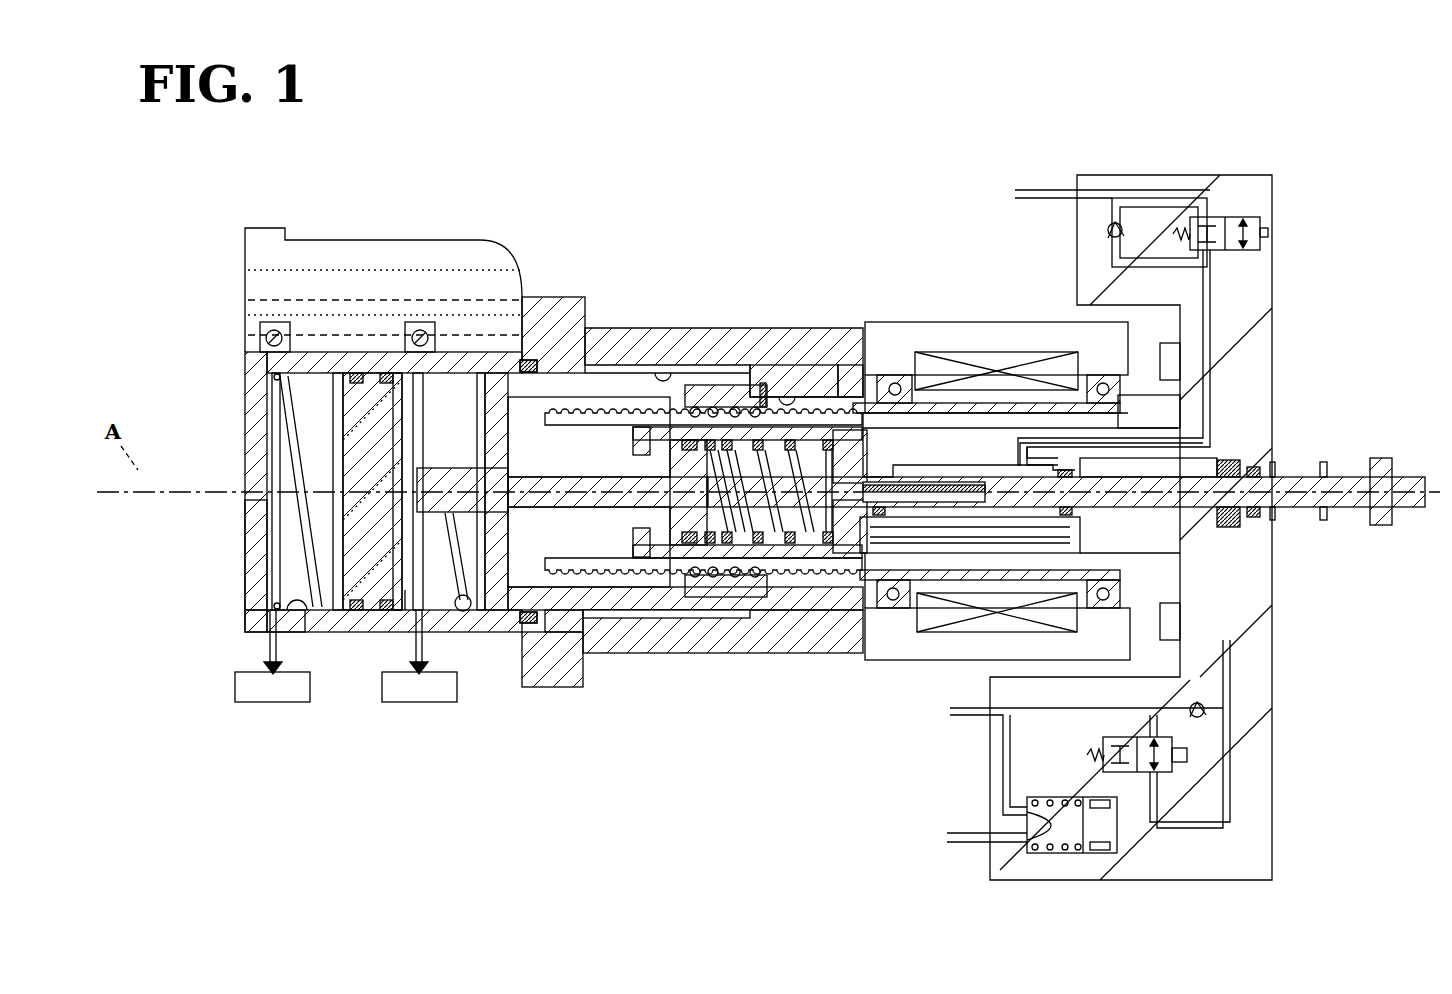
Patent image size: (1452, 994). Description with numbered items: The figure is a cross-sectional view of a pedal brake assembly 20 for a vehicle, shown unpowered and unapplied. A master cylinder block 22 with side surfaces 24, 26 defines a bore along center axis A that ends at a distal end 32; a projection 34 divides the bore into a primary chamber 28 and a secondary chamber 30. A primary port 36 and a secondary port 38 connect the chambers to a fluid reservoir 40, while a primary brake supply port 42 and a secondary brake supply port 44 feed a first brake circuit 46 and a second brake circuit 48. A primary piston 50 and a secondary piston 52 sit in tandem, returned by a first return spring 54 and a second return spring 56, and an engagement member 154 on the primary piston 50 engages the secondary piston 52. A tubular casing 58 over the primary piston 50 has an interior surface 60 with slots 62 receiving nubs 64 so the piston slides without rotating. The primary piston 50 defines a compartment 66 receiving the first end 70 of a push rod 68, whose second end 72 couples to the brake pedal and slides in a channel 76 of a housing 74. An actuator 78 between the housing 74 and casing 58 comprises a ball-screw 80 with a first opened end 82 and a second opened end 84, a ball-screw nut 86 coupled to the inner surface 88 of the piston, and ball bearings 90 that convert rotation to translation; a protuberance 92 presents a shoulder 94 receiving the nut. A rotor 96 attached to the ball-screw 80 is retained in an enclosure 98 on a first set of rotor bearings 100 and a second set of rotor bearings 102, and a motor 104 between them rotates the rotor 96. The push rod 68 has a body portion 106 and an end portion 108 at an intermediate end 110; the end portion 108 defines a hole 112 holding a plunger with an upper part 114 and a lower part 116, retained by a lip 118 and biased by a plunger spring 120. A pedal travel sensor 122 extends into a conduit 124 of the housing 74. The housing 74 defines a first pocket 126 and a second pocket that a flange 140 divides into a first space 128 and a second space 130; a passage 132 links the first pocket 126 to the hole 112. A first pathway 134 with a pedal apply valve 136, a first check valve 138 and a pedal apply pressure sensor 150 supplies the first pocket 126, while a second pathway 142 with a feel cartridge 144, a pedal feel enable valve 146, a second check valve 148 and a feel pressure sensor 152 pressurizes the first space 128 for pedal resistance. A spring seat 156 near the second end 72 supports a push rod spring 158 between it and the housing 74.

The pedal brake assembly 20 is at (135, 312).
The master cylinder block 22 is at (240, 388).
The side surface 24 is at (533, 672).
The side surface 26 is at (245, 612).
The primary chamber 28 is at (467, 612).
The secondary chamber 30 is at (300, 620).
The distal end 32 is at (266, 557).
The projection 34 is at (405, 605).
The primary port 36 is at (420, 385).
The secondary port 38 is at (270, 332).
The fluid reservoir 40 is at (355, 240).
The primary brake supply port 42 is at (421, 598).
The secondary brake supply port 44 is at (272, 600).
The first brake circuit 46 is at (419, 703).
The second brake circuit 48 is at (272, 703).
The primary piston 50 is at (490, 398).
The secondary piston 52 is at (380, 385).
The first return spring 54 is at (283, 450).
The second return spring 56 is at (443, 440).
The casing 58 is at (648, 335).
The interior surface 60 is at (802, 394).
The slots 62 is at (715, 455).
The nubs 64 is at (745, 374).
The compartment 66 is at (763, 383).
The push rod 68 is at (1302, 505).
The first end 70 is at (635, 432).
The second end 72 is at (1422, 502).
The housing 74 is at (1275, 265).
The channel 76 is at (1250, 475).
The actuator 78 is at (915, 310).
The ball-screw 80 is at (713, 578).
The first opened end 82 is at (540, 562).
The second opened end 84 is at (853, 570).
The ball-screw nut 86 is at (732, 598).
The inner surface 88 is at (697, 600).
The ball bearings 90 is at (713, 405).
The protuberance 92 is at (563, 397).
The shoulder 94 is at (680, 586).
The rotor 96 is at (1005, 405).
The enclosure 98 is at (943, 320).
The first set of rotor bearings 100 is at (893, 372).
The second set of rotor bearings 102 is at (1095, 374).
The motor 104 is at (988, 355).
The body portion 106 is at (930, 475).
The end portion 108 is at (720, 385).
The intermediate end 110 is at (845, 520).
The hole 112 is at (770, 548).
The upper part 114 is at (676, 525).
The lower part 116 is at (532, 477).
The lip 118 is at (643, 455).
The plunger spring 120 is at (625, 413).
The pedal travel sensor 122 is at (910, 525).
The conduit 124 is at (928, 520).
The first pocket 126 is at (988, 522).
The first space 128 is at (1130, 465).
The second space 130 is at (1215, 512).
The passage 132 is at (912, 488).
The first pathway 134 is at (1212, 340).
The pedal apply valve 136 is at (1215, 216).
The first check valve 138 is at (1108, 232).
The flange 140 is at (1215, 470).
The second pathway 142 is at (1272, 690).
The feel cartridge 144 is at (1103, 812).
The pedal feel enable valve 146 is at (1170, 782).
The second check valve 148 is at (1190, 752).
The pedal apply pressure sensor 150 is at (1165, 330).
The feel pressure sensor 152 is at (1170, 620).
The engagement member 154 is at (433, 483).
The spring seat 156 is at (1385, 524).
The push rod spring 158 is at (1323, 460).